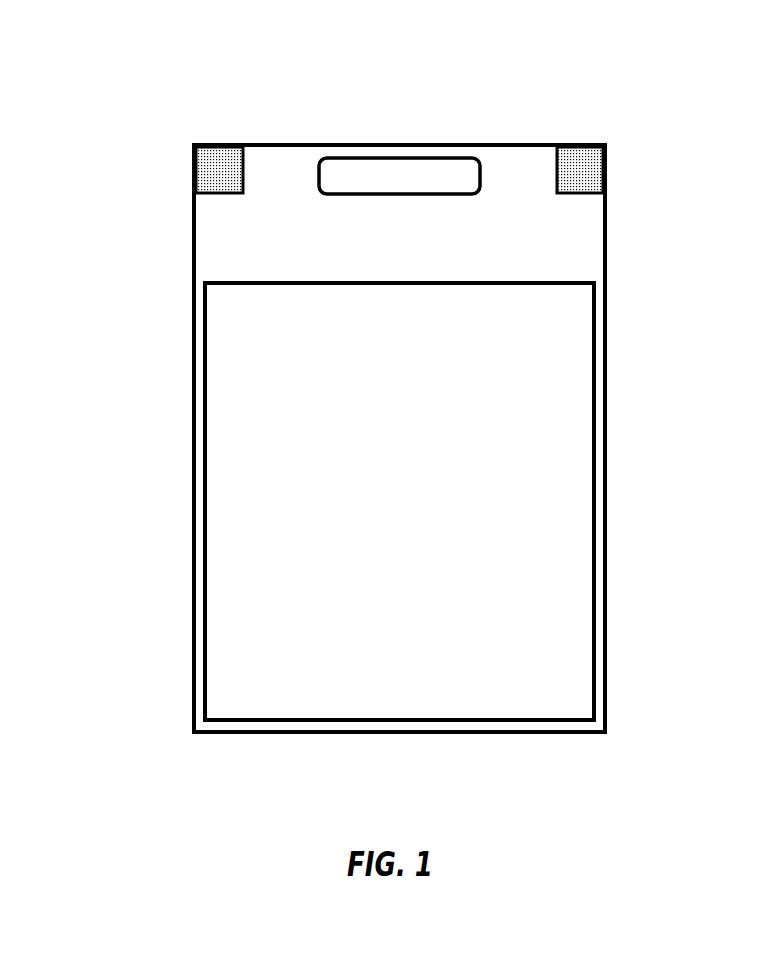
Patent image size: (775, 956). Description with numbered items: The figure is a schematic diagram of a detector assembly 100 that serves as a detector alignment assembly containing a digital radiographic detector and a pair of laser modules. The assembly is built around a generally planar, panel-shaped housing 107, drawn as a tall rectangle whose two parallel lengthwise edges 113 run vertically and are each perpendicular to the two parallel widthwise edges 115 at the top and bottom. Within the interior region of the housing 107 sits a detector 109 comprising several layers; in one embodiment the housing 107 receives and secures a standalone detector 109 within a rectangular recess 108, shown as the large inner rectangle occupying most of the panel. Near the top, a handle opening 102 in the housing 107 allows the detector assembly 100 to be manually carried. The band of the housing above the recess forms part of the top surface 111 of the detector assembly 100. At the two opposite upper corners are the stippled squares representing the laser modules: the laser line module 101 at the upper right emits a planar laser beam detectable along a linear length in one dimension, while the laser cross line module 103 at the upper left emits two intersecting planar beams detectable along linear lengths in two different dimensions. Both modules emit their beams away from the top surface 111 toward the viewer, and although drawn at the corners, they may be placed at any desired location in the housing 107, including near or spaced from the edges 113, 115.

The detector assembly 100 is at (354, 68).
The laser line module 101 is at (587, 173).
The handle opening 102 is at (418, 173).
The laser cross line module 103 is at (215, 170).
The housing 107 is at (193, 348).
The rectangular recess 108 is at (595, 429).
The detector 109 is at (205, 467).
The top surface 111 is at (563, 252).
The lengthwise edges 113 is at (190, 605).
The widthwise edges 115 is at (533, 143).